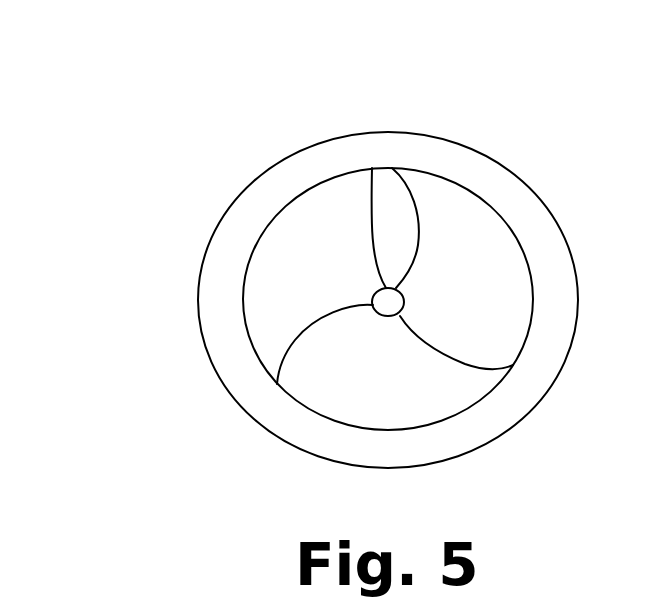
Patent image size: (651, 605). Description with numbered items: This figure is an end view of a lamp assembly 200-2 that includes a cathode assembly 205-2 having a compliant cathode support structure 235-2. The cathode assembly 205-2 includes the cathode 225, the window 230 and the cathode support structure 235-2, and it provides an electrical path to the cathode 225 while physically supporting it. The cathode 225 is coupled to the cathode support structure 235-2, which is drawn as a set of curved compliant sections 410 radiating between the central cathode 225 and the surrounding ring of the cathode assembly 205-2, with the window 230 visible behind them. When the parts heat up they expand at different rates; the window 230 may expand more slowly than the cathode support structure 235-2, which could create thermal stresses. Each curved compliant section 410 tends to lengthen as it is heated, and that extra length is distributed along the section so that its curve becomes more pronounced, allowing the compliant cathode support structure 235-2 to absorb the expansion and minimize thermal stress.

The lamp assembly 200-2 is at (184, 58).
The cathode assembly 205-2 is at (258, 371).
The cathode 225 is at (372, 168).
The window 230 is at (408, 389).
The compliant cathode support structure 235-2 is at (337, 247).
The curved compliant sections 410 is at (420, 222).